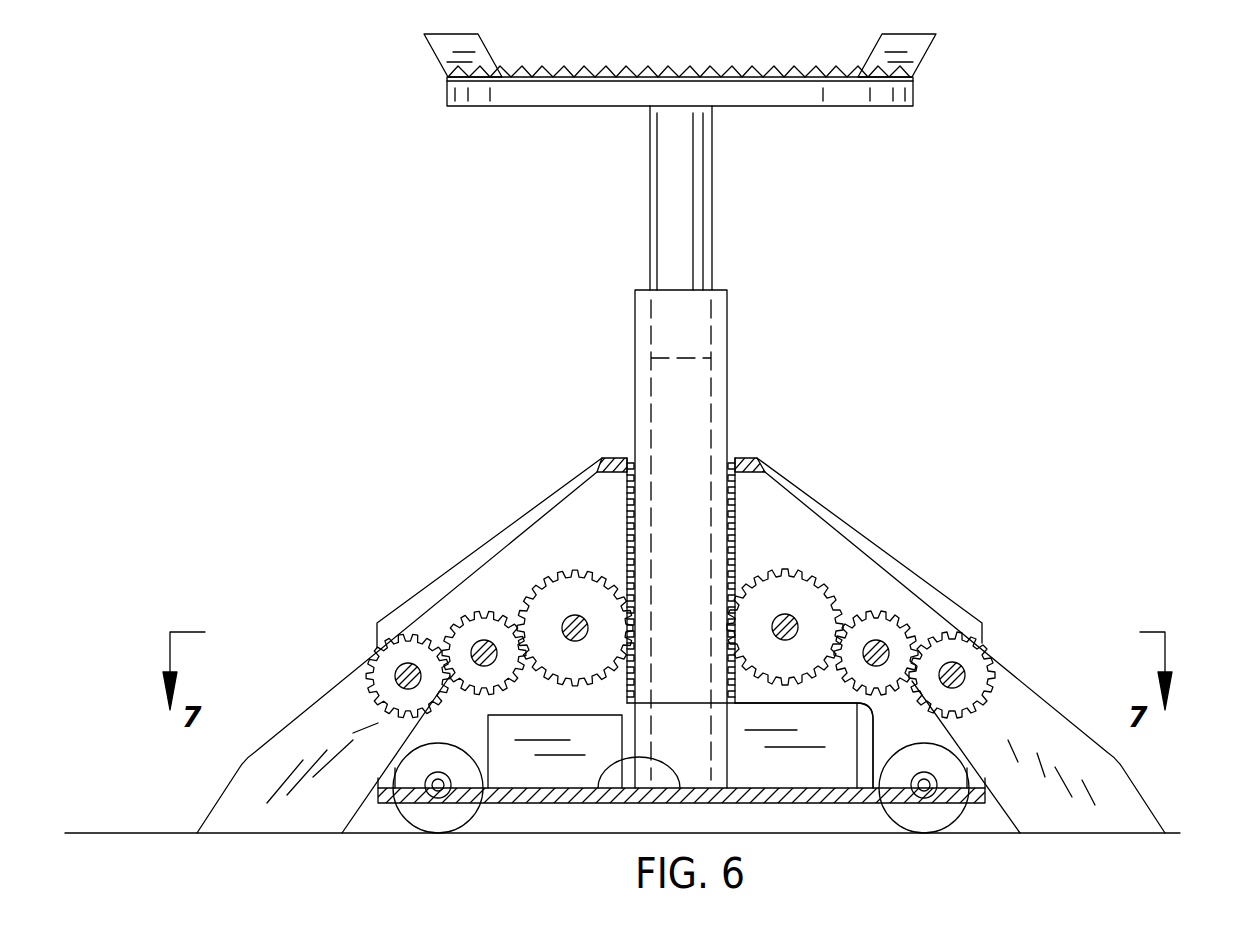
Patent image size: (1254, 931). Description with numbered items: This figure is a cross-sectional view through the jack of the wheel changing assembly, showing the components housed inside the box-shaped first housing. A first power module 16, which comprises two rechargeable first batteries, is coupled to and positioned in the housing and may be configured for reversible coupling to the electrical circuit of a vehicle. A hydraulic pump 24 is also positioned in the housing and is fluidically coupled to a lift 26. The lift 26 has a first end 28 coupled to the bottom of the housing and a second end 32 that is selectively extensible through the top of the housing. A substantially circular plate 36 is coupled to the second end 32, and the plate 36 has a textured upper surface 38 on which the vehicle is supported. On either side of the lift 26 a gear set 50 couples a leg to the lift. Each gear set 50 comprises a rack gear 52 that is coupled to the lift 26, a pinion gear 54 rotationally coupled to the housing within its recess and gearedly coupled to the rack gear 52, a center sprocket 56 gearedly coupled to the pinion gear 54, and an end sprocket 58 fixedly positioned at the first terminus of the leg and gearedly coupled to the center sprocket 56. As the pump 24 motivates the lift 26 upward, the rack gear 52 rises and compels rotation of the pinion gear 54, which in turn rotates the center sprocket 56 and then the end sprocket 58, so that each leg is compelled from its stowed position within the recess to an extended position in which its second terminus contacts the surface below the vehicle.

The first power module 16 is at (520, 745).
The pump 24 is at (850, 728).
The lift 26 is at (695, 413).
The first end 28 is at (615, 765).
The second end 32 is at (678, 110).
The plate 36 is at (898, 98).
The upper surface 38 is at (723, 63).
The gear set 50 is at (945, 640).
The rack gear 52 is at (630, 500).
The pinion gear 54 is at (565, 567).
The center sprocket 56 is at (477, 615).
The end sprocket 58 is at (407, 637).